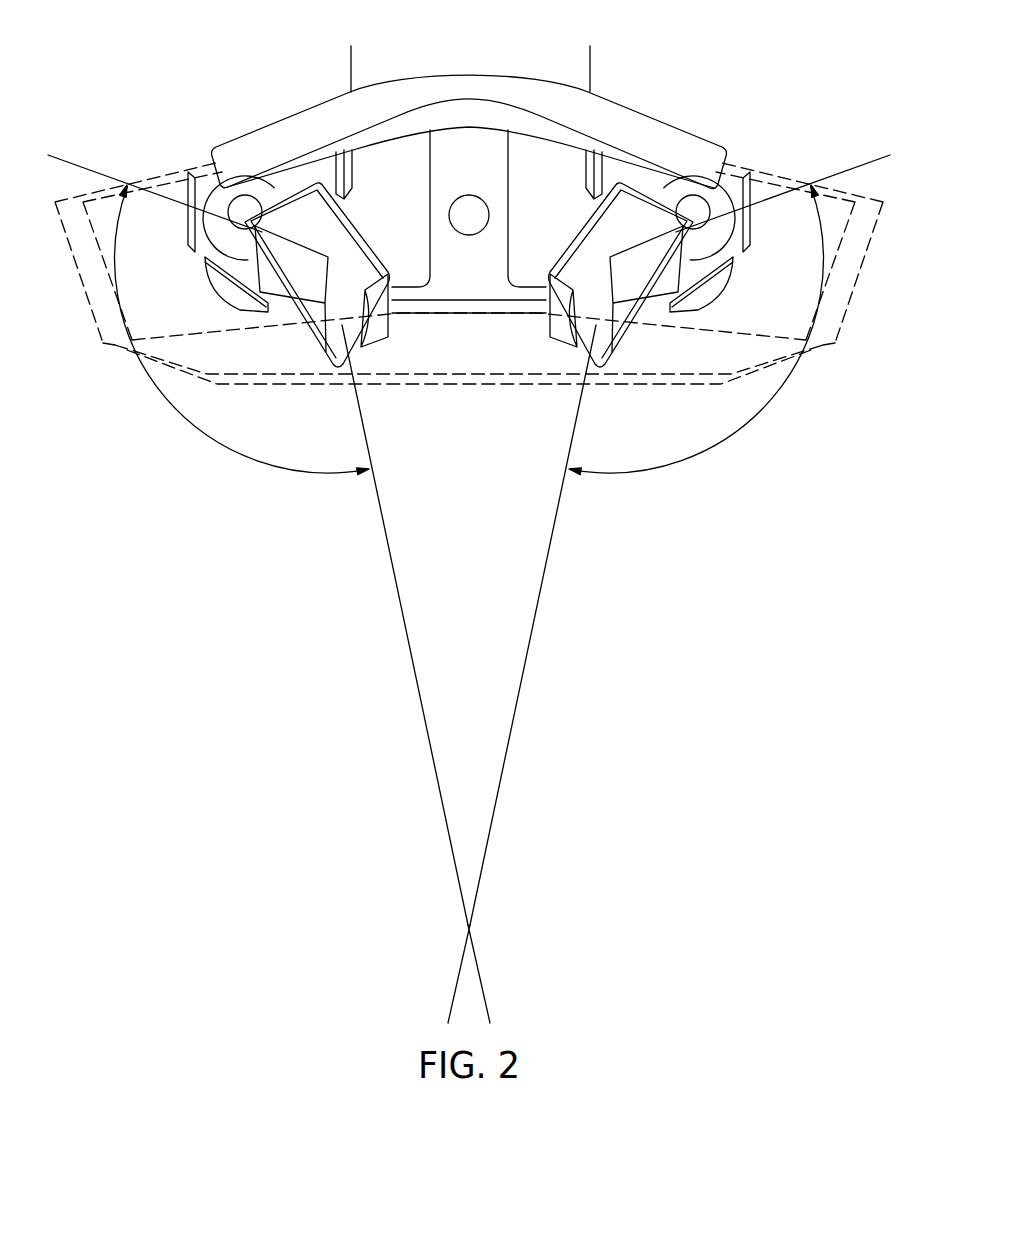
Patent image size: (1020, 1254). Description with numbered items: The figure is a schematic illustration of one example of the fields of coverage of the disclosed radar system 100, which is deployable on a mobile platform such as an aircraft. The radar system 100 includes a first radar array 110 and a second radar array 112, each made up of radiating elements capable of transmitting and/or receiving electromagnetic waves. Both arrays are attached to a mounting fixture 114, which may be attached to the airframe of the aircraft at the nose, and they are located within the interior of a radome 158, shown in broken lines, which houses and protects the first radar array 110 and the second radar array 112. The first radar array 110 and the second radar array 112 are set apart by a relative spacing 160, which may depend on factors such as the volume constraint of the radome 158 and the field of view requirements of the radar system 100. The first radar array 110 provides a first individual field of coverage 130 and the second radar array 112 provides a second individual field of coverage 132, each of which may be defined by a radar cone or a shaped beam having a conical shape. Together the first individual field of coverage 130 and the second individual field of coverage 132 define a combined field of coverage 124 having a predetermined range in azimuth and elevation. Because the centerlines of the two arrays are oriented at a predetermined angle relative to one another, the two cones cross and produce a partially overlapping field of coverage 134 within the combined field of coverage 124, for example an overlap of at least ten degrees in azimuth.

The radar system 100 is at (730, 70).
The first radar array 110 is at (550, 338).
The second radar array 112 is at (388, 338).
The mounting fixture 114 is at (267, 125).
The combined field of coverage 124 is at (405, 752).
The first individual field of coverage 130 is at (729, 315).
The second individual field of coverage 132 is at (208, 315).
The overlapping field of coverage 134 is at (452, 997).
The radome 158 is at (113, 350).
The relative spacing 160 is at (590, 46).